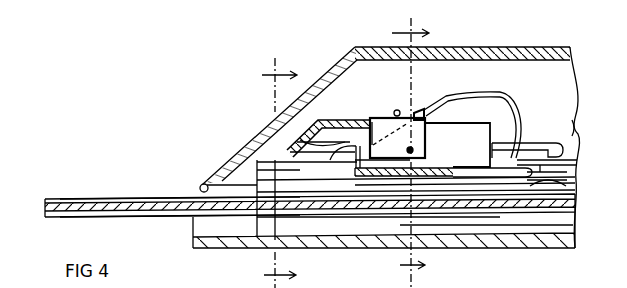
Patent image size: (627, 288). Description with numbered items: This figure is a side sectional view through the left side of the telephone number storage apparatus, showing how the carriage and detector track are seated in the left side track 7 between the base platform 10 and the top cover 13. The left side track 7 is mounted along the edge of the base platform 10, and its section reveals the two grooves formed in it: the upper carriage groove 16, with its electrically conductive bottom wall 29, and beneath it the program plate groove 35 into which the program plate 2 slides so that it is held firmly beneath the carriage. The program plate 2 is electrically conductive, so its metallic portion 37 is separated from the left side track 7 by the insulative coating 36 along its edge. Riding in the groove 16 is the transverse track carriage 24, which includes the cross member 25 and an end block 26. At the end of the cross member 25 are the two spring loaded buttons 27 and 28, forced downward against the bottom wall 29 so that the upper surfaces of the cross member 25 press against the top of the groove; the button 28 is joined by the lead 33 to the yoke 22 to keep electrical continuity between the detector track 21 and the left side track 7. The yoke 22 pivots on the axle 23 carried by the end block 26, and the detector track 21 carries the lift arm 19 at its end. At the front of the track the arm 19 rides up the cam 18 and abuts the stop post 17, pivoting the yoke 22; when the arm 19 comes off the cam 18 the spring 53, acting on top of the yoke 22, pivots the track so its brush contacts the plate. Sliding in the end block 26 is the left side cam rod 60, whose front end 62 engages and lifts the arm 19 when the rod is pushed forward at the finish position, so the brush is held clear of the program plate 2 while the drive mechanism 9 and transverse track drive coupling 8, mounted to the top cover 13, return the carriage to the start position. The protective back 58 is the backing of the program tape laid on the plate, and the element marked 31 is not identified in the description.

The program plate 2 is at (52, 197).
The left side track 7 is at (203, 188).
The transverse track drive coupling 8 is at (276, 172).
The drive mechanism 9 is at (410, 151).
The base platform 10 is at (545, 236).
The top cover 13 is at (470, 47).
The groove 16 is at (578, 188).
The stop post 17 is at (312, 110).
The cam 18 is at (372, 121).
The lift arm 19 is at (343, 126).
The detector track 21 is at (350, 120).
The yoke 22 is at (426, 130).
The axle 23 is at (413, 150).
The transverse track carriage 24 is at (510, 97).
The cross member 25 is at (328, 225).
The end block 26 is at (462, 123).
The spring loaded button 27 is at (380, 212).
The spring loaded button 28 is at (512, 213).
The bottom wall 29 is at (578, 176).
The post 31 is at (578, 163).
The lead 33 is at (420, 111).
The program plate groove 35 is at (430, 213).
The insulative coating 36 is at (70, 198).
The metallic portion 37 is at (105, 212).
The spring 53 is at (397, 109).
The protective back 58 is at (578, 126).
The left side cam rod 60 is at (524, 142).
The front end 62 is at (352, 143).